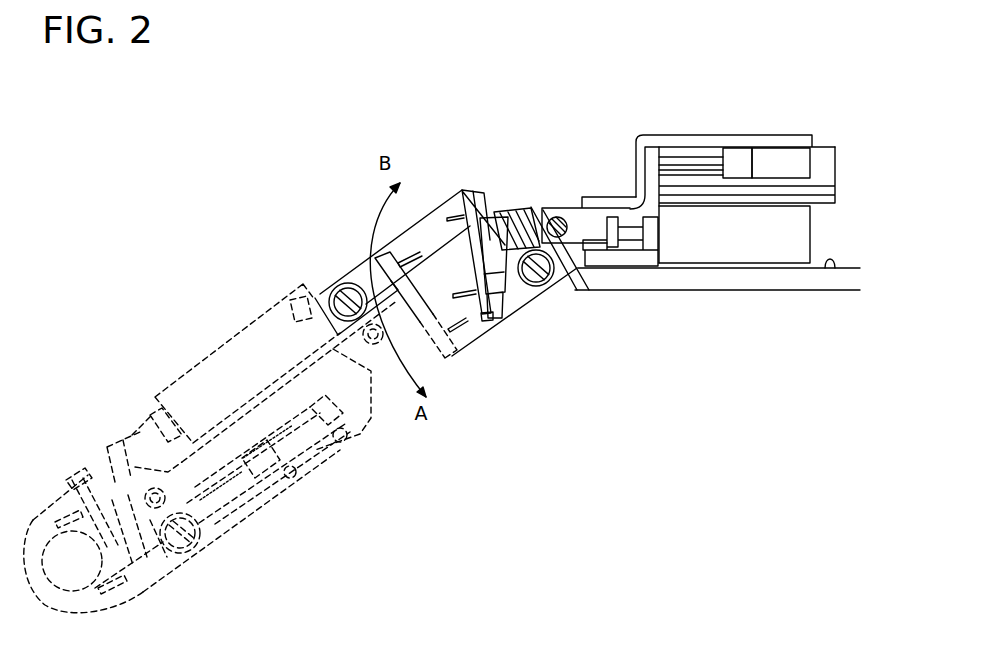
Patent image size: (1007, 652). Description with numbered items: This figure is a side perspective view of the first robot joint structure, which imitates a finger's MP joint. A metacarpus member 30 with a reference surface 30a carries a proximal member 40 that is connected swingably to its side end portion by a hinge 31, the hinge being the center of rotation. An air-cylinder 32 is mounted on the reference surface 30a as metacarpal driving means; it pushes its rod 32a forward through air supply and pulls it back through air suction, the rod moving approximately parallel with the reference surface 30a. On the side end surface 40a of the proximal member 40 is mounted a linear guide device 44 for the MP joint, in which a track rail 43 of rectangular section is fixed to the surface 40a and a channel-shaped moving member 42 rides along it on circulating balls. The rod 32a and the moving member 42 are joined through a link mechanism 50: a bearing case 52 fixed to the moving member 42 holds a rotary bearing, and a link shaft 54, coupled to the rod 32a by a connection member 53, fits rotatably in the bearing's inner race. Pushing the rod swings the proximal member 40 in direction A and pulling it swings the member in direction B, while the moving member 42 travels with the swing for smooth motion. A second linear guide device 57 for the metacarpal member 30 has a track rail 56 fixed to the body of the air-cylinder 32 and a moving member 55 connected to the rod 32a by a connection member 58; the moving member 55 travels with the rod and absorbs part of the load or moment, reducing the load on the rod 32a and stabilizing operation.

The metacarpus member 30 is at (693, 280).
The reference surface 30a is at (832, 275).
The hinge 31 is at (537, 282).
The air-cylinder 32 is at (748, 255).
The rod 32a is at (630, 240).
The proximal member 40 is at (428, 208).
The side end surface 40a is at (480, 323).
The moving member 42 is at (492, 215).
The track rail 43 is at (486, 192).
The linear guide device for the MP joint 44 is at (493, 203).
The link mechanism 50 is at (595, 228).
The bearing case 52 is at (520, 222).
The connection member 53 is at (590, 219).
The link shaft 54 is at (574, 278).
The moving member 55 is at (772, 160).
The track rail 56 is at (788, 195).
The linear guide device for the metacarpal member 57 is at (747, 156).
The connection member 58 is at (688, 138).